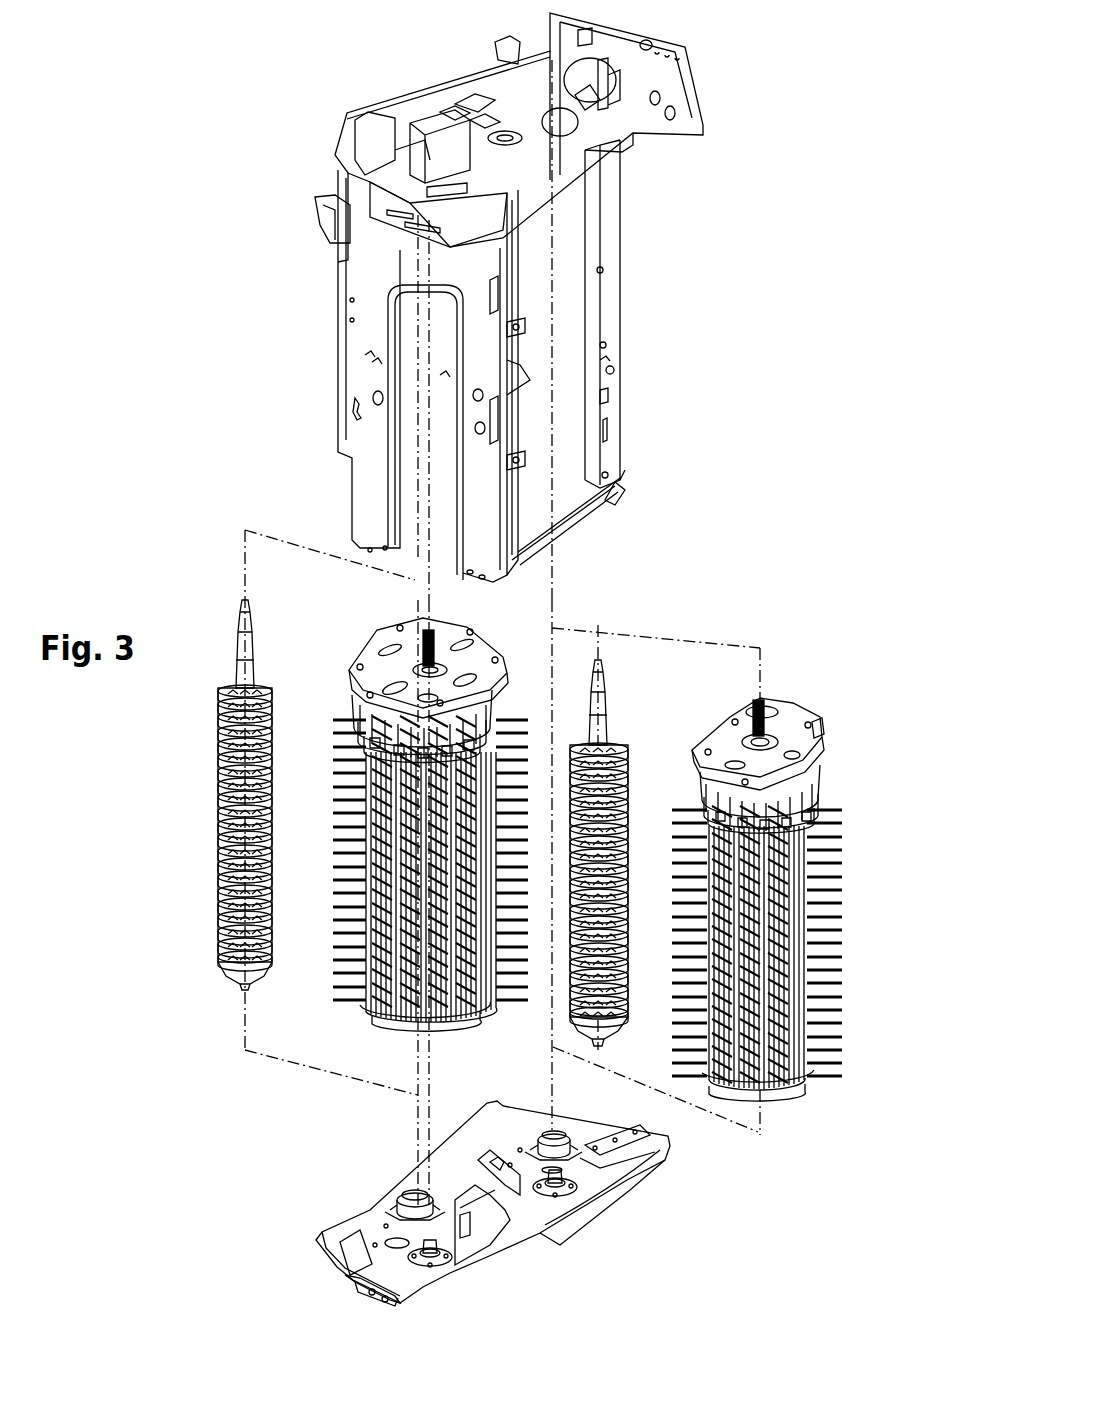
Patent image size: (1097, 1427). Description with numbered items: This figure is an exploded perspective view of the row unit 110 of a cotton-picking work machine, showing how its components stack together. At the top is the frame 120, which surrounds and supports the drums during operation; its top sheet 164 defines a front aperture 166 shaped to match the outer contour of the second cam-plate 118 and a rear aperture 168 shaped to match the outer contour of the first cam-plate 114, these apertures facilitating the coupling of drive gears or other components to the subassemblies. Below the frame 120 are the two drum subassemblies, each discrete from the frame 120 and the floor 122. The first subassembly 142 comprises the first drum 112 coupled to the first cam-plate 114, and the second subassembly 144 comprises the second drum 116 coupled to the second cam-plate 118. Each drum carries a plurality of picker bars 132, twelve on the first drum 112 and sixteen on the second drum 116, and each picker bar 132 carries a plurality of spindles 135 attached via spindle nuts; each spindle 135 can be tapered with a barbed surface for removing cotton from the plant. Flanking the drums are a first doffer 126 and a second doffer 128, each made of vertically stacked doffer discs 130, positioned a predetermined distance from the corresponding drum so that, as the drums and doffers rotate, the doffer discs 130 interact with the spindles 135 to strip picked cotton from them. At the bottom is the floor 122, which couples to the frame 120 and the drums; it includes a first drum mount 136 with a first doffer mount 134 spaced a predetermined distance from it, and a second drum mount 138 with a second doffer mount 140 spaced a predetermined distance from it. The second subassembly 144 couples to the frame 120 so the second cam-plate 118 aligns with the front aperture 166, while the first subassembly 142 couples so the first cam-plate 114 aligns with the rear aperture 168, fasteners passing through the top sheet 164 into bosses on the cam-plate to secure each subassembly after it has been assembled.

The row unit 110 is at (152, 130).
The first drum 112 is at (868, 850).
The first cam-plate 114 is at (790, 720).
The second drum 116 is at (340, 1035).
The second cam-plate 118 is at (383, 656).
The frame 120 is at (612, 318).
The floor 122 is at (350, 1212).
The first doffer 126 is at (215, 835).
The second doffer 128 is at (627, 752).
The doffer discs 130 is at (222, 780).
The picker bars 132 is at (417, 1027).
The first doffer mount 134 is at (585, 1150).
The spindles 135 is at (522, 940).
The first drum mount 136 is at (560, 1192).
The second drum mount 138 is at (445, 1262).
The second doffer mount 140 is at (413, 1200).
The first subassembly 142 is at (800, 668).
The second subassembly 144 is at (375, 612).
The top sheet 164 is at (465, 105).
The front aperture 166 is at (392, 145).
The rear aperture 168 is at (585, 88).